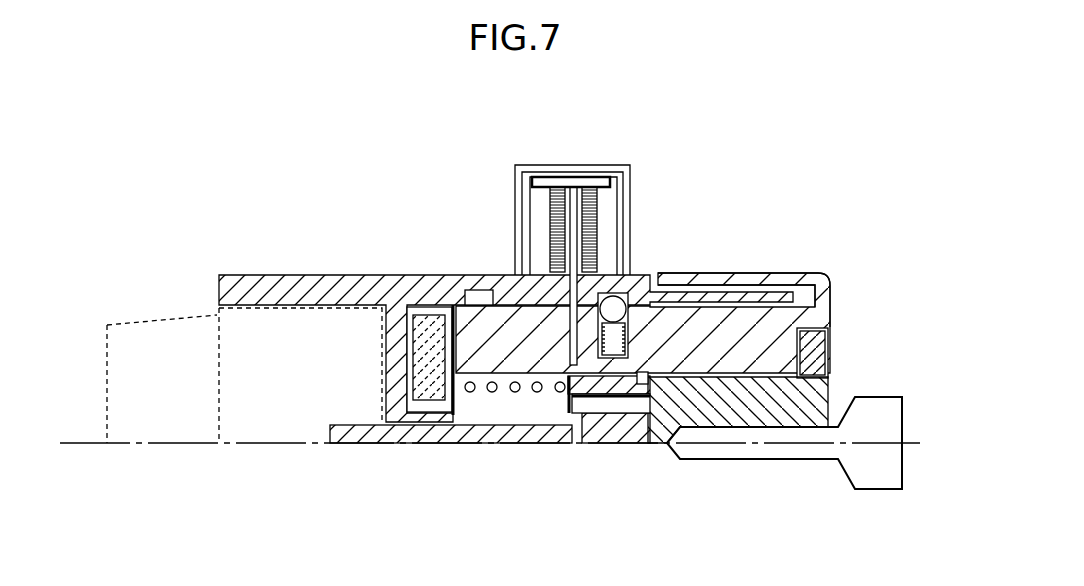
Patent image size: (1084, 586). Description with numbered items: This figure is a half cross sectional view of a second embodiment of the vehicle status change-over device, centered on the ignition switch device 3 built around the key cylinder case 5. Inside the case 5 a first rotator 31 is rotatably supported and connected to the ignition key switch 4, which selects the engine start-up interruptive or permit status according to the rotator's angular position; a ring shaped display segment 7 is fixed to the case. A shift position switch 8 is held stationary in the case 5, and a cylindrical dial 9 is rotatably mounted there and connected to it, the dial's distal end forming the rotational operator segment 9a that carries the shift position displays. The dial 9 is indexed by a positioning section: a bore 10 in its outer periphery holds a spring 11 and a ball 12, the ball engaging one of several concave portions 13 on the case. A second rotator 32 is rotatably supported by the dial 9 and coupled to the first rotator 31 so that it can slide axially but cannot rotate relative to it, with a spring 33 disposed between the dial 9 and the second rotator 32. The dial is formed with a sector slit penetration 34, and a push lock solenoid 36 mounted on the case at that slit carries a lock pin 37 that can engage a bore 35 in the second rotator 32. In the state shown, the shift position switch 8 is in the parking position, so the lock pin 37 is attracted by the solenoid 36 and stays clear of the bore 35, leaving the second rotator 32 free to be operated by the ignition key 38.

The ignition switch device 3 is at (506, 310).
The ignition key switch 4 is at (165, 440).
The key cylinder case 5 is at (334, 273).
The display segment 7 is at (830, 350).
The shift position switch 8 is at (434, 312).
The dial 9 is at (722, 320).
The rotational operator segment 9a is at (773, 273).
The bore 10 is at (588, 377).
The spring 11 is at (655, 413).
The ball 12 is at (608, 297).
The concave portions 13 is at (630, 298).
The first rotator 31 is at (378, 443).
The second rotator 32 is at (757, 418).
The spring 33 is at (490, 394).
The sector slit penetration 34 is at (553, 352).
The bore 35 is at (598, 400).
The push lock solenoid 36 is at (558, 190).
The lock pin 37 is at (573, 230).
The ignition key 38 is at (878, 478).